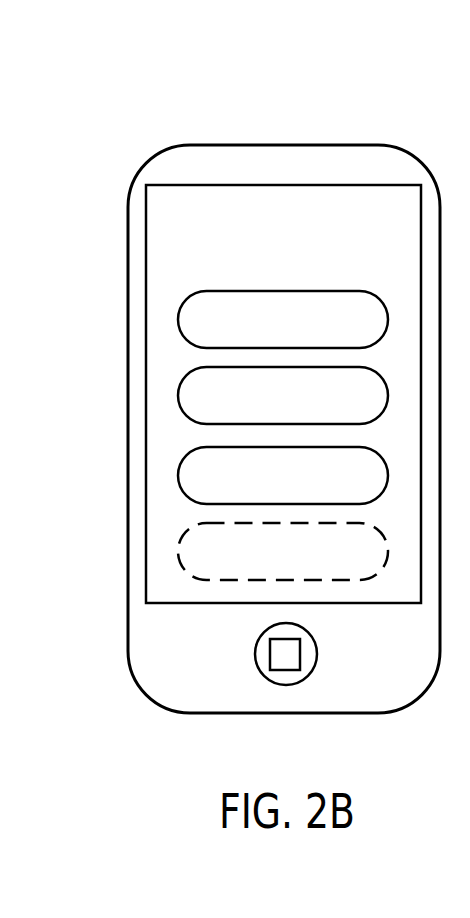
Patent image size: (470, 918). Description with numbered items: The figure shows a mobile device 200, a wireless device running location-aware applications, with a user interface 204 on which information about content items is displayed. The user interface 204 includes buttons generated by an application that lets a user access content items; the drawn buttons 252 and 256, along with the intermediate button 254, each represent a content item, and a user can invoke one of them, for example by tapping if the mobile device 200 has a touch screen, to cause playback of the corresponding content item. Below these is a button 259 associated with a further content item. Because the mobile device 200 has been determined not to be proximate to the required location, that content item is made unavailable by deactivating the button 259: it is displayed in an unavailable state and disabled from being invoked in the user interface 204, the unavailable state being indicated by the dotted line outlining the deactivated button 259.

The mobile device 200 is at (262, 121).
The user interface 204 is at (203, 233).
The button 252 is at (178, 320).
The Episode 2 selectable element 254 is at (178, 397).
The button 256 is at (178, 475).
The button 259 is at (178, 553).